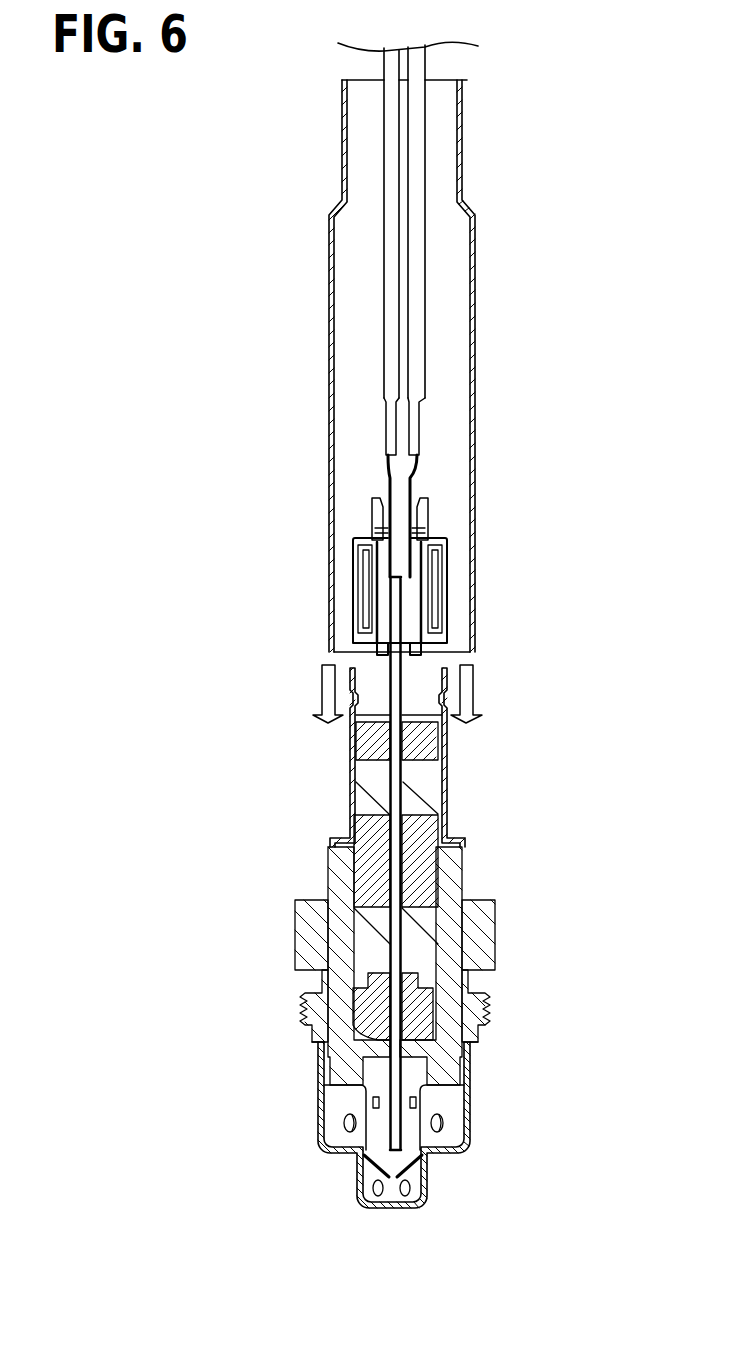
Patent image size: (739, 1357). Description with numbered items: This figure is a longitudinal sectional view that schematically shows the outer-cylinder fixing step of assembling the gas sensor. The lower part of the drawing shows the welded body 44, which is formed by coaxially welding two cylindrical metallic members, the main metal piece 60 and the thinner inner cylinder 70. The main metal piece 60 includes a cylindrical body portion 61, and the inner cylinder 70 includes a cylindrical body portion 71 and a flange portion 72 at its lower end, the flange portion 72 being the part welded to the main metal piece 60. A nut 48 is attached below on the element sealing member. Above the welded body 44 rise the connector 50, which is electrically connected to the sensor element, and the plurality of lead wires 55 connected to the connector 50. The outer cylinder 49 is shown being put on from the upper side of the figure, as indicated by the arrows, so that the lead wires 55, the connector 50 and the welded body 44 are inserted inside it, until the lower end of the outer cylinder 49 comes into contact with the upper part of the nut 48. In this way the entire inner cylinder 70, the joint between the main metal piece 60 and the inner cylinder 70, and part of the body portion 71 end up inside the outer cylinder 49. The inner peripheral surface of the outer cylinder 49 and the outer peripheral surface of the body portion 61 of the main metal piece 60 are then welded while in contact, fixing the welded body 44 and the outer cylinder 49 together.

The welded body 44 is at (440, 933).
The nut 48 is at (478, 932).
The outer cylinder 49 is at (470, 347).
The connector 50 is at (447, 590).
The lead wires 55 is at (415, 276).
The main metal piece 60 is at (450, 858).
The body portion 61 is at (337, 928).
The inner cylinder 70 is at (447, 818).
The body portion 71 is at (350, 740).
The flange portion 72 is at (343, 842).